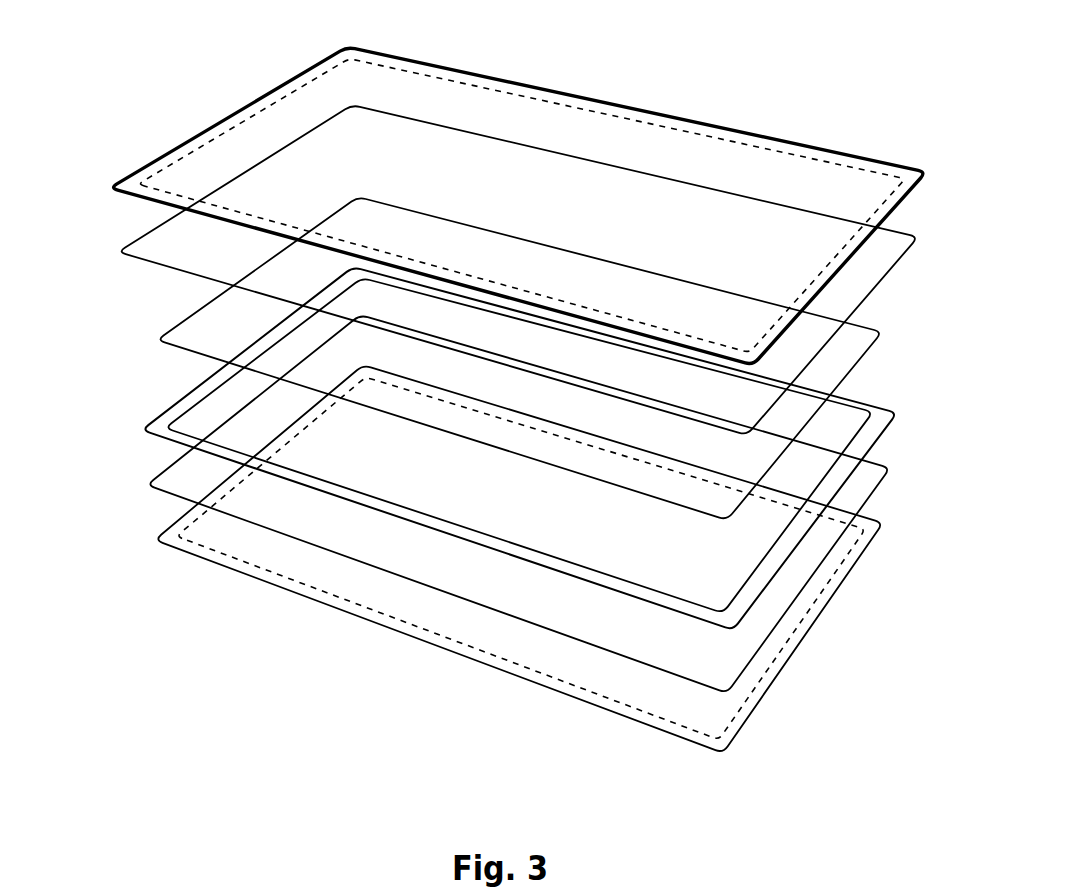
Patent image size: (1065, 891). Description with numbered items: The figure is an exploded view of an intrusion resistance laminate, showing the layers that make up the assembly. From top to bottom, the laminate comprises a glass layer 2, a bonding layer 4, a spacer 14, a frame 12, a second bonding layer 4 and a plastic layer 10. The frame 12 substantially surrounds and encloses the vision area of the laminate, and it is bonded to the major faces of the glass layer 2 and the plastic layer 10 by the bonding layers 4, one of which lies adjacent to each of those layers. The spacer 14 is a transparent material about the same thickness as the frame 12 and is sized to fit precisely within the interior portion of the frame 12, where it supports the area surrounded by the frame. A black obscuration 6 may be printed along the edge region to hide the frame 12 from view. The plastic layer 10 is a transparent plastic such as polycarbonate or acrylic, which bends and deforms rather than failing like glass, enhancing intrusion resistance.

The glass layer 2 is at (244, 91).
The bonding layers 4 is at (130, 223).
The black obscuration 6 is at (787, 142).
The plastic layer 10 is at (145, 528).
The frame 12 is at (163, 390).
The spacer 14 is at (172, 308).